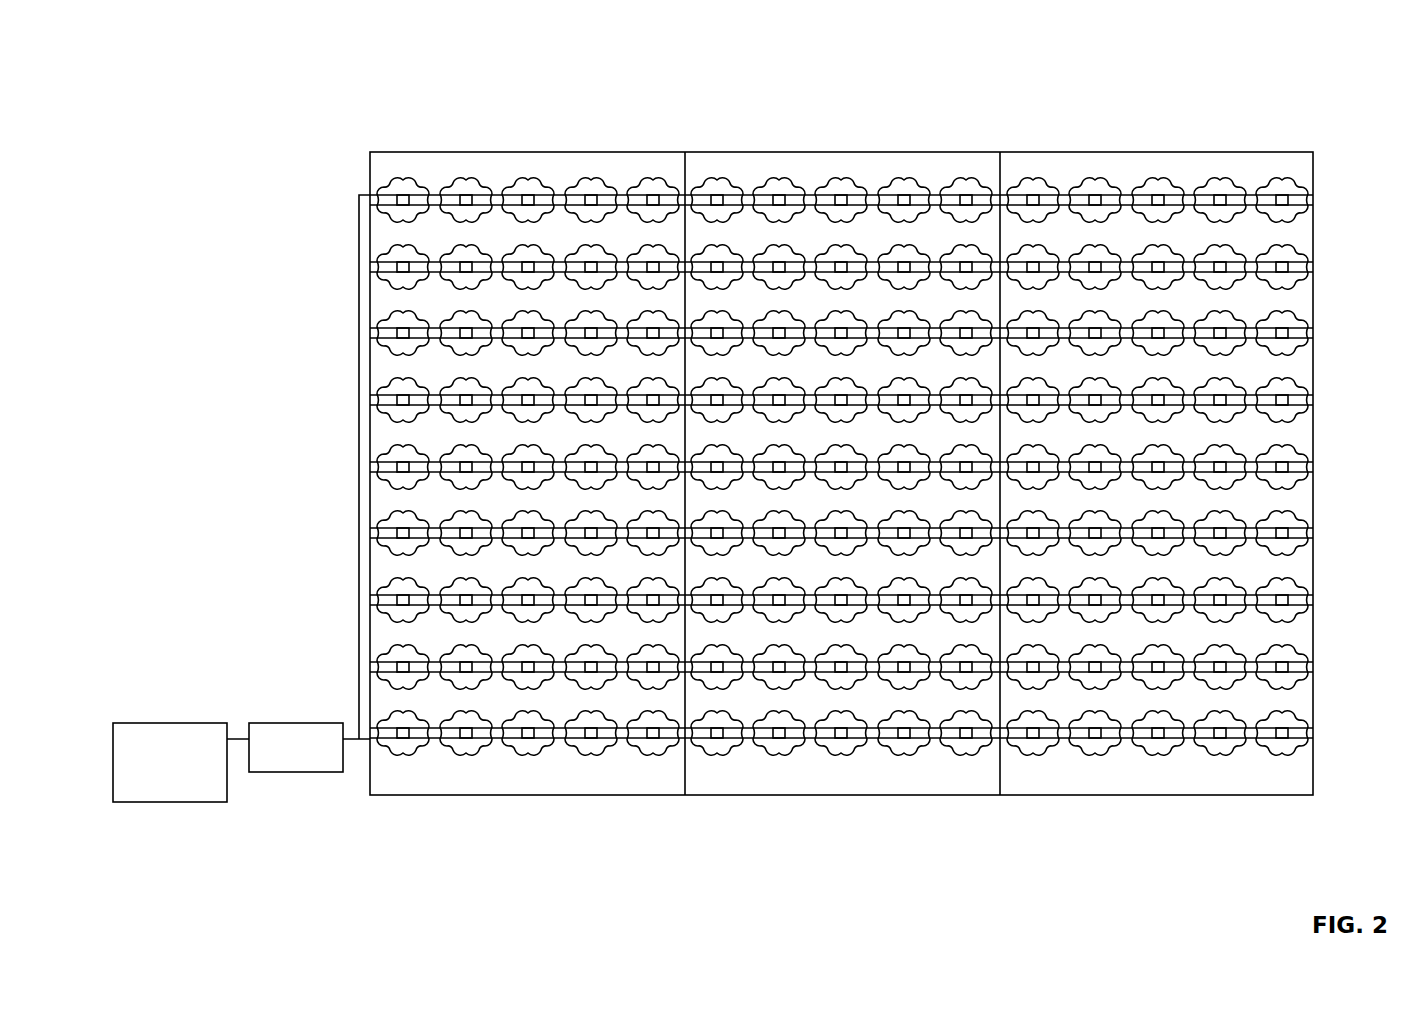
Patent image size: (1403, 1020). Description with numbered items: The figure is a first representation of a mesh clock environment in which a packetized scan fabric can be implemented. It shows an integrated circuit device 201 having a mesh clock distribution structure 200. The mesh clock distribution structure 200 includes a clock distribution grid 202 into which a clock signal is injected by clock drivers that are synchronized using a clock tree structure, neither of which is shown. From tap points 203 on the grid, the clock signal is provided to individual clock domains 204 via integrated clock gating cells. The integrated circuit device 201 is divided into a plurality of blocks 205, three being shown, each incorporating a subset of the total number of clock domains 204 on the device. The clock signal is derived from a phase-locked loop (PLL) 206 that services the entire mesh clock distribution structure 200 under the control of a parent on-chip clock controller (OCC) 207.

The mesh clock distribution structure 200 is at (1313, 92).
The integrated circuit device 201 is at (258, 44).
The clock distribution grid 202 is at (358, 230).
The tap points 203 is at (591, 203).
The clock domains 204 is at (524, 182).
The blocks 205 is at (682, 857).
The phase-locked loop (PLL) 206 is at (183, 723).
The on-chip clock controller (OCC) 207 is at (320, 723).